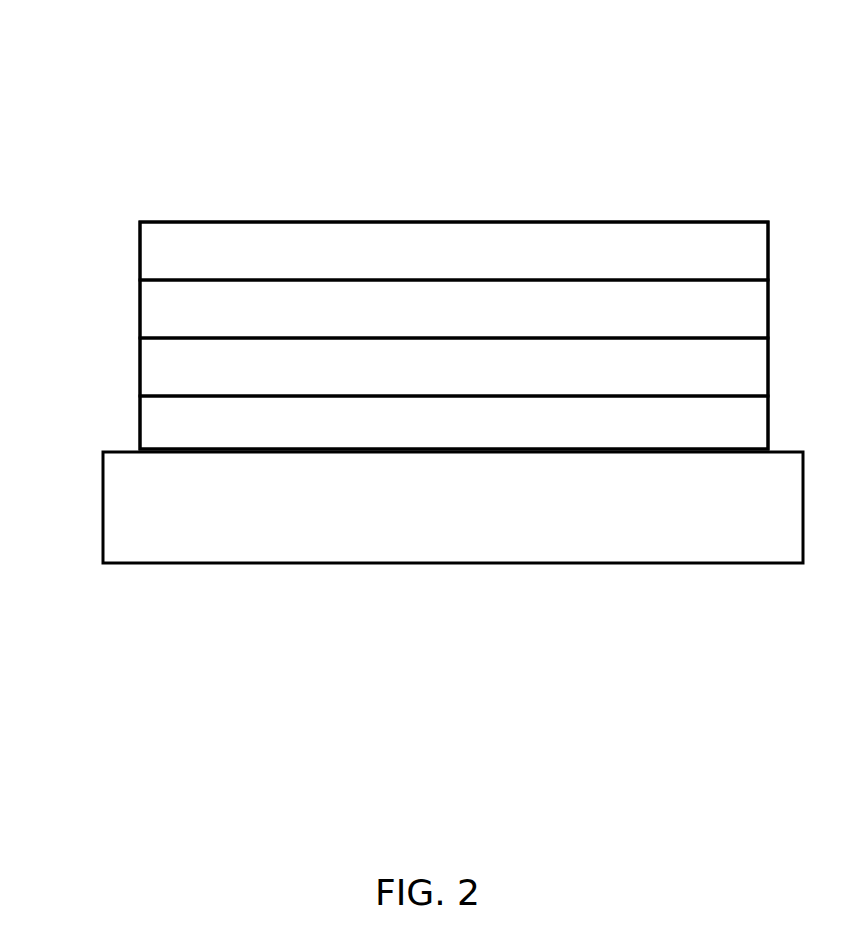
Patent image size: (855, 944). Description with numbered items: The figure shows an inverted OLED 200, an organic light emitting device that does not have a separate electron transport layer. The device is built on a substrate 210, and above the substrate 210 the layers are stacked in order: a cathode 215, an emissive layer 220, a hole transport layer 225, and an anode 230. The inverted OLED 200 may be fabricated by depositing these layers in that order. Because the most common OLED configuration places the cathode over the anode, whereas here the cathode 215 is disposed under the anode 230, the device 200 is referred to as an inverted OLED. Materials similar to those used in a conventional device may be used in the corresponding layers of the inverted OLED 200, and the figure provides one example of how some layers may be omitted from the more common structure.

The inverted OLED 200 is at (288, 165).
The substrate 210 is at (407, 564).
The cathode 215 is at (138, 423).
The emissive layer 220 is at (138, 368).
The hole transport layer 225 is at (138, 308).
The anode 230 is at (138, 251).